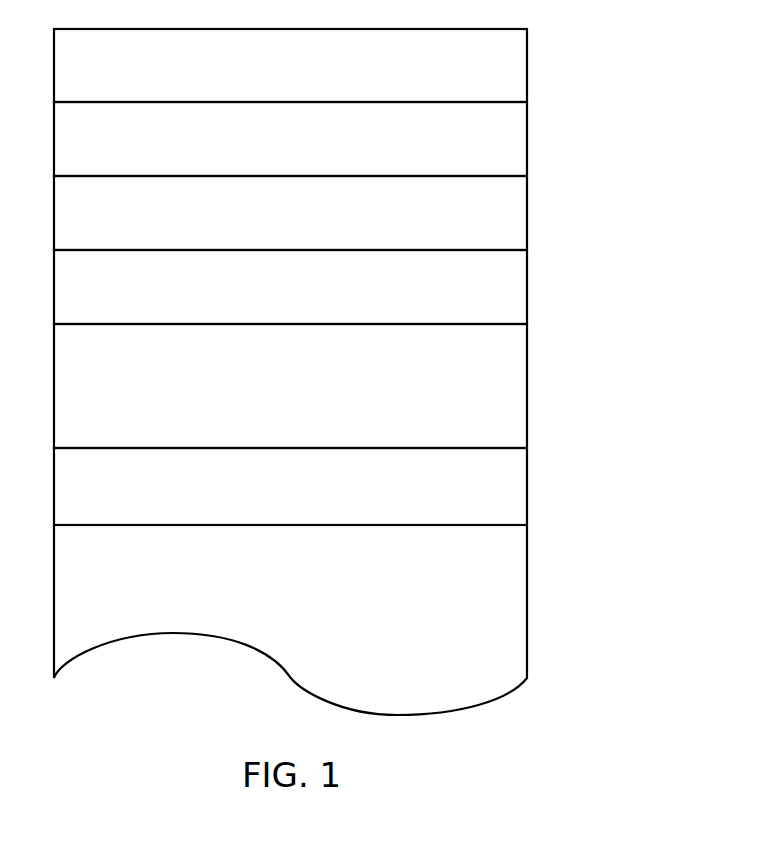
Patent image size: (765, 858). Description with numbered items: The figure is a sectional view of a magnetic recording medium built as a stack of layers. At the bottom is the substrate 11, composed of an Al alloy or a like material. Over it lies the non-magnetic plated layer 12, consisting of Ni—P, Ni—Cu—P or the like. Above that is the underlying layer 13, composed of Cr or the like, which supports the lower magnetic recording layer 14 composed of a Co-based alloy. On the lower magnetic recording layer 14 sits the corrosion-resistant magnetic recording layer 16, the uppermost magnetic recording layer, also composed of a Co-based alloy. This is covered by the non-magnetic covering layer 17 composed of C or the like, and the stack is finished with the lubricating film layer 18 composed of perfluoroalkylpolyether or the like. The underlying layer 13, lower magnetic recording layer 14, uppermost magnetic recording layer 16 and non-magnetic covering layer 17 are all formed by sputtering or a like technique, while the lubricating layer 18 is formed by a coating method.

The substrate 11 is at (527, 608).
The non-magnetic plated layer 12 is at (527, 497).
The underlying layer 13 is at (527, 373).
The lower magnetic recording layer 14 is at (527, 287).
The corrosion-resistant magnetic recording layer 16 is at (527, 223).
The non-magnetic covering layer 17 is at (527, 137).
The lubricating film layer 18 is at (527, 78).